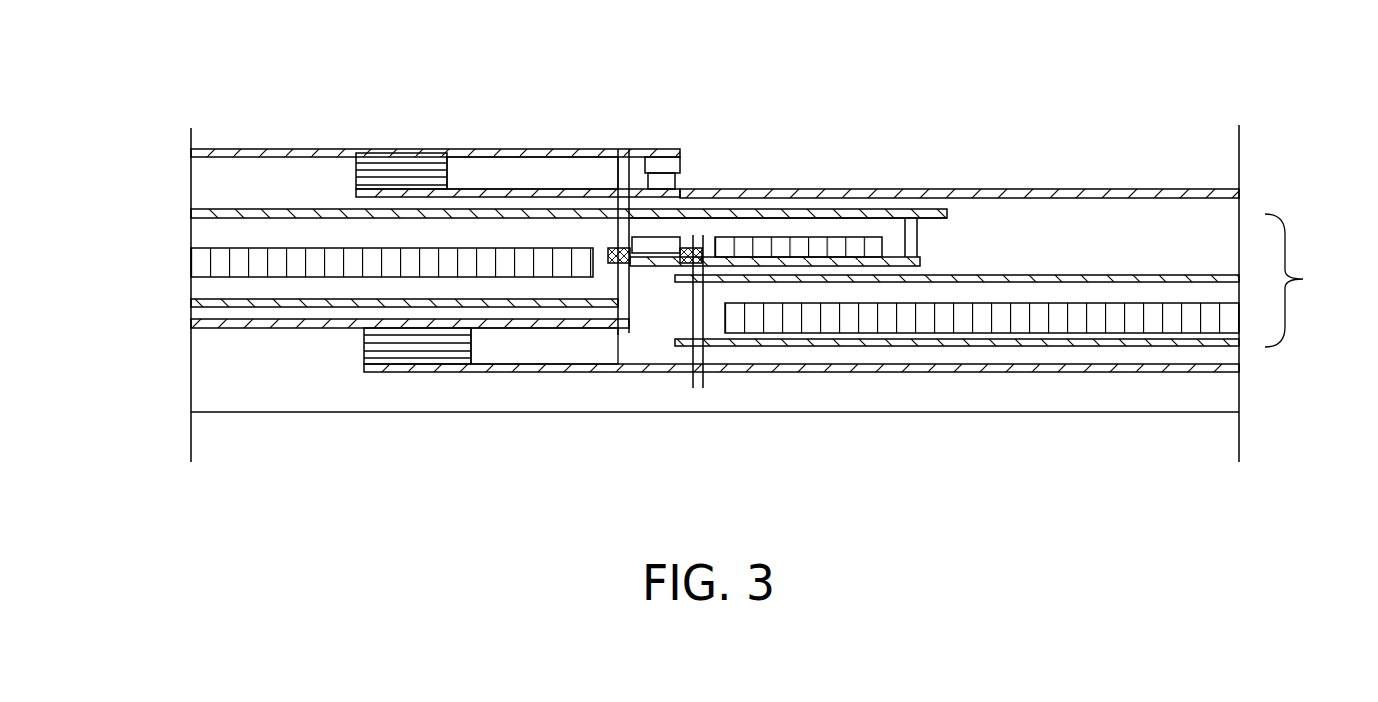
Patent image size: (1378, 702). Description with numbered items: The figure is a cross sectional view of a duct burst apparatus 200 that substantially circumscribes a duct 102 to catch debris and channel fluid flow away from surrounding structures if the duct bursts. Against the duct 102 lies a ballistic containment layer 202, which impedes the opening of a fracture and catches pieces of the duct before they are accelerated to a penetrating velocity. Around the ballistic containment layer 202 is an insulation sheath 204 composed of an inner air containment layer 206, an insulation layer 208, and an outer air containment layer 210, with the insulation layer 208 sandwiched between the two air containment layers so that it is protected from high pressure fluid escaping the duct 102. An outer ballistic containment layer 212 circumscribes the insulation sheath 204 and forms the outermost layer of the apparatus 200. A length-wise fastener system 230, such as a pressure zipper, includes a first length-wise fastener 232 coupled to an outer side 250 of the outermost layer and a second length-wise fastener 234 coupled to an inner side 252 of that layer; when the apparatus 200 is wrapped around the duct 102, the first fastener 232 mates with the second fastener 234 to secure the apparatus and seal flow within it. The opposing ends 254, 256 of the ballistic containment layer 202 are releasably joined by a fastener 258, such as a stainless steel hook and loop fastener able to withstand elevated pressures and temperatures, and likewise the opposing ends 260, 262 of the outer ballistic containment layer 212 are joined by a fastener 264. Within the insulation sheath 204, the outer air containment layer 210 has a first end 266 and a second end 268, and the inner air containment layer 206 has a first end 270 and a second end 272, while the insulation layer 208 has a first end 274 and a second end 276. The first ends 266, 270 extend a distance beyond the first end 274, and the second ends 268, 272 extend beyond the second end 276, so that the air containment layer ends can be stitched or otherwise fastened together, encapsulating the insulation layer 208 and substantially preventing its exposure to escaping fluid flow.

The duct burst apparatus 200 is at (995, 88).
The duct 102 is at (190, 411).
The ballistic containment layer 202 is at (191, 325).
The insulation sheath 204 is at (1311, 280).
The inner air containment layer 206 is at (190, 301).
The insulation layer 208 is at (190, 260).
The outer air containment layer 210 is at (190, 213).
The outer ballistic containment layer 212 is at (190, 152).
The length-wise fastener system 230 is at (708, 134).
The first length-wise fastener 232 is at (682, 167).
The second length-wise fastener 234 is at (677, 182).
The outer side 250 is at (447, 137).
The inner side 252 is at (823, 188).
The opposing end of ballistic containment layer 254 is at (537, 330).
The opposing end of ballistic containment layer 256 is at (550, 362).
The fastener 258 is at (363, 343).
The opposing end of outer ballistic containment layer 260 is at (527, 157).
The opposing end of outer ballistic containment layer 262 is at (545, 187).
The fastener 264 is at (400, 168).
The first end of outer air containment layer 266 is at (947, 218).
The second end of outer air containment layer 268 is at (677, 283).
The first end of inner air containment layer 270 is at (920, 263).
The second end of inner air containment layer 272 is at (680, 335).
The first end of insulation layer 274 is at (798, 237).
The second end of insulation layer 276 is at (752, 298).